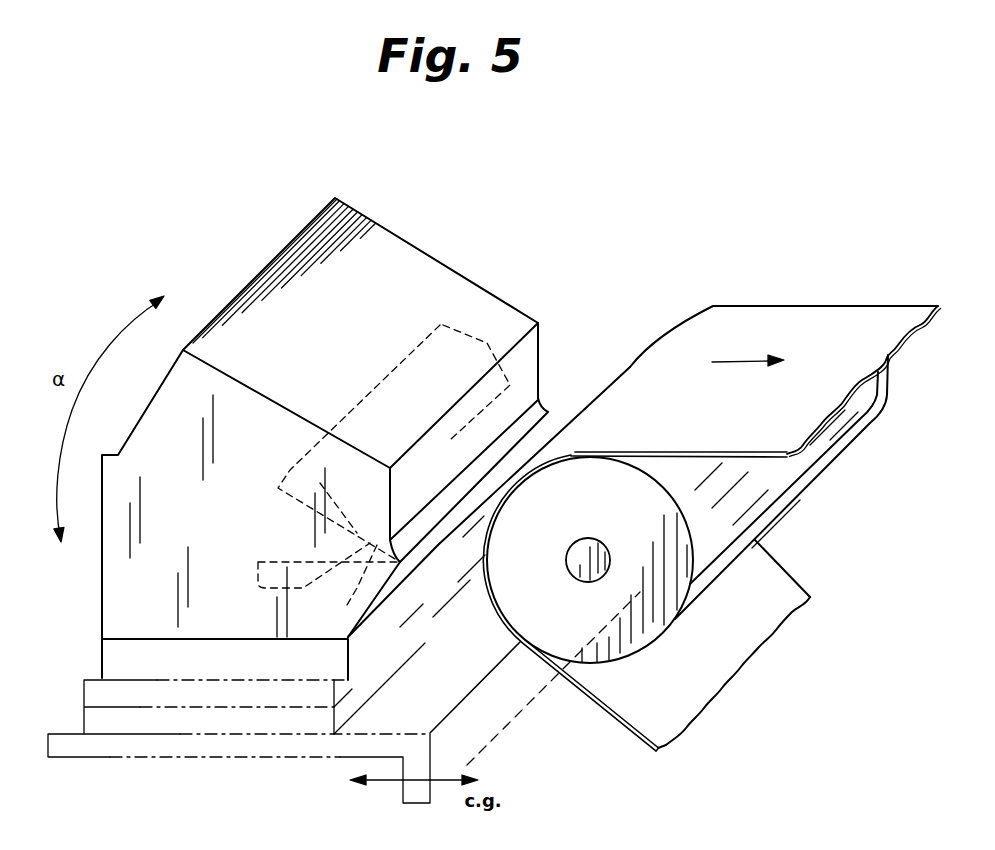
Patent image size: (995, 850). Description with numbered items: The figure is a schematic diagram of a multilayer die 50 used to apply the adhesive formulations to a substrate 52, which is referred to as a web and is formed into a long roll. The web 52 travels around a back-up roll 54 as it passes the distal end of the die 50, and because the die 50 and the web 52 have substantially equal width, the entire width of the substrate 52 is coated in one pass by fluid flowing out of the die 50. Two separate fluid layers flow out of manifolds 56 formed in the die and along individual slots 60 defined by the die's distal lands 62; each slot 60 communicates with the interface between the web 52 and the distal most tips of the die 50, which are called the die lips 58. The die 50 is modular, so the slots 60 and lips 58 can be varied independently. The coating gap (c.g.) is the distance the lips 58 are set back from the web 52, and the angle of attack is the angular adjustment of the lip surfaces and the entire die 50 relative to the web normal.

The multilayer die 50 is at (618, 208).
The substrate 52 is at (793, 306).
The back-up roll 54 is at (613, 664).
The manifolds 56 is at (266, 572).
The die lips 58 is at (425, 543).
The slots 60 is at (357, 590).
The distal lands 62 is at (515, 390).